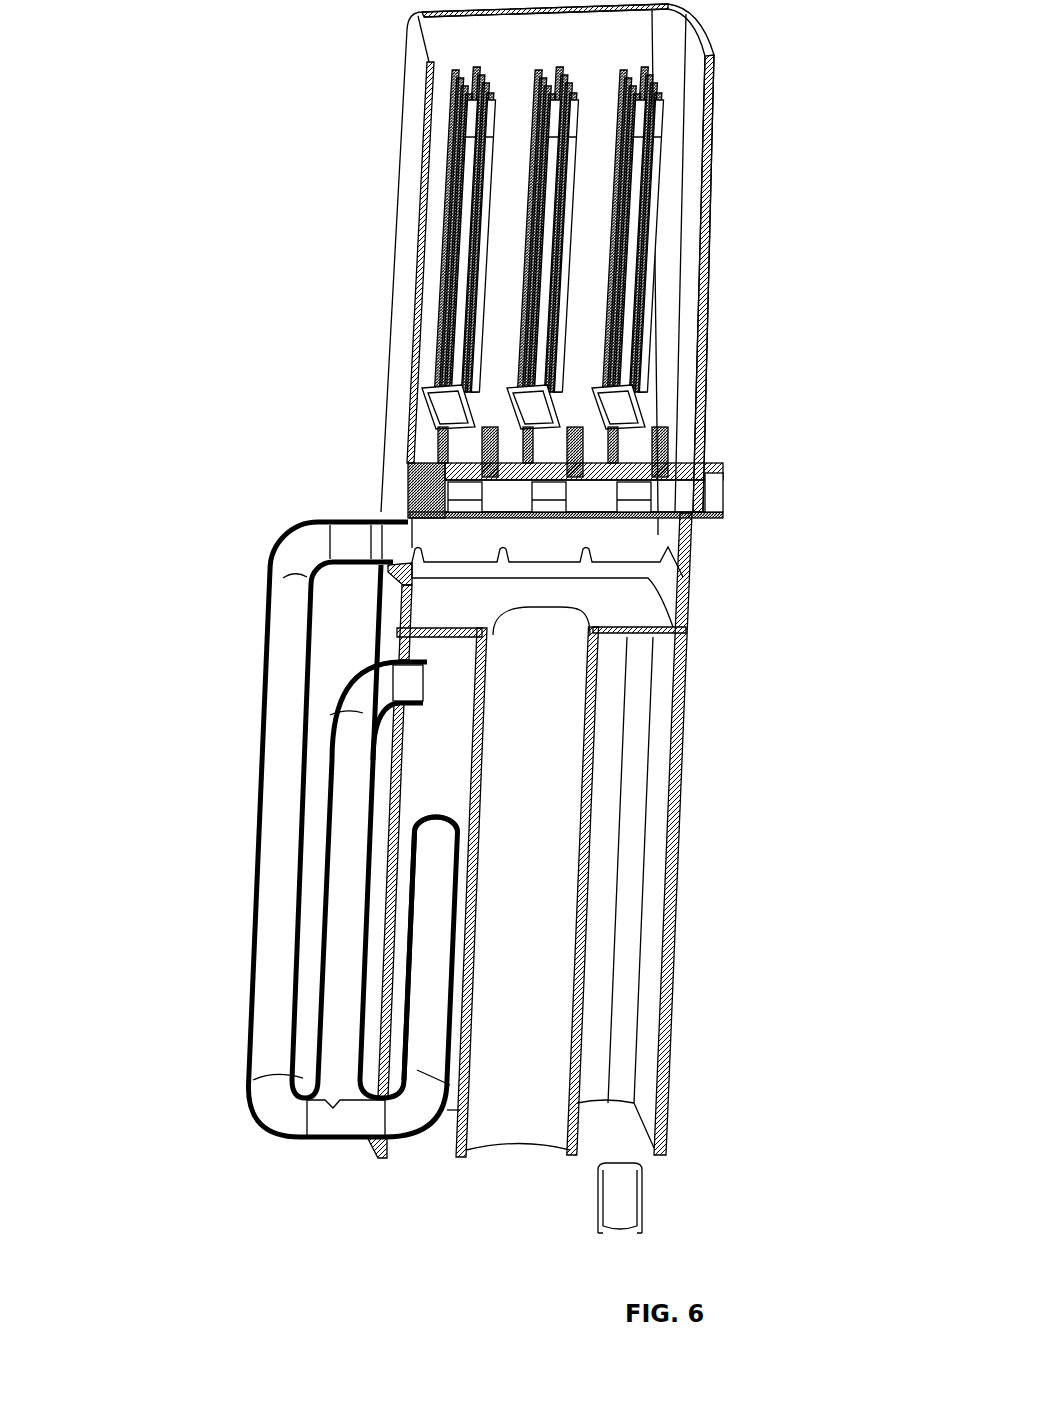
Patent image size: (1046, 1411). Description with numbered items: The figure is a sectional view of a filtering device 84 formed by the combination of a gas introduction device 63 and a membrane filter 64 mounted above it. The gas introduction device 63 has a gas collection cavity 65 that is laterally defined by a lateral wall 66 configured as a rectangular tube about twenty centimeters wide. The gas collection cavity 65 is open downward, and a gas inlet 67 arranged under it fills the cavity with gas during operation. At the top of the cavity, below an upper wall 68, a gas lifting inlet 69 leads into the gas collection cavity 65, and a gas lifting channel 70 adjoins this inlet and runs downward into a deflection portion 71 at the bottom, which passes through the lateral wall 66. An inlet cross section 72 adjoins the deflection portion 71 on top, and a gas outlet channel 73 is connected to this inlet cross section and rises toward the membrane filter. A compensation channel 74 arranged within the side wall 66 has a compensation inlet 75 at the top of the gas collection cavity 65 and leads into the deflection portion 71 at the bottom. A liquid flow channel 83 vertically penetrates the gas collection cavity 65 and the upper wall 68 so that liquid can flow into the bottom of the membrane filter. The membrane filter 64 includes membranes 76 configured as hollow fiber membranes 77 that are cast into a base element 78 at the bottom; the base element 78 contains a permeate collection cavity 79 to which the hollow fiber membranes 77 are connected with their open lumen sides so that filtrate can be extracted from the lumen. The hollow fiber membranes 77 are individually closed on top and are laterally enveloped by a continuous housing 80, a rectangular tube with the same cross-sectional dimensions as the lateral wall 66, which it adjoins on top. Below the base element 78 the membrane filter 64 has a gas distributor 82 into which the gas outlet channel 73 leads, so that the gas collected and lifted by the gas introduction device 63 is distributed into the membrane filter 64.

The gas introduction device 63 is at (122, 678).
The membrane filter 64 is at (166, 209).
The gas collection cavity 65 is at (638, 885).
The lateral wall 66 is at (680, 612).
The gas inlet 67 is at (643, 1185).
The upper wall 68 is at (657, 633).
The gas lifting inlet 69 is at (425, 680).
The gas lifting channel 70 is at (350, 771).
The deflection portion 71 is at (318, 1123).
The inlet cross section 72 is at (270, 1087).
The gas outlet channel 73 is at (270, 1016).
The compensation channel 74 is at (430, 946).
The compensation inlet 75 is at (440, 828).
The membranes 76 is at (667, 187).
The hollow fiber membranes 77 is at (663, 257).
The base element 78 is at (430, 468).
The permeate collection cavity 79 is at (500, 497).
The housing 80 is at (704, 372).
The gas distributor 82 is at (640, 535).
The liquid flow channel 83 is at (538, 960).
The filtering device 84 is at (806, 84).